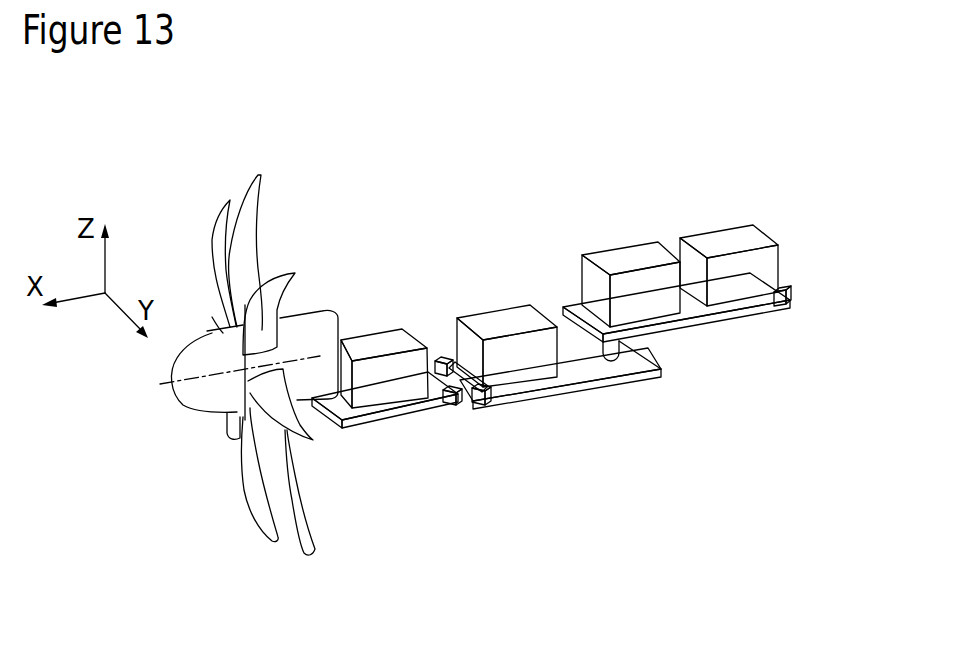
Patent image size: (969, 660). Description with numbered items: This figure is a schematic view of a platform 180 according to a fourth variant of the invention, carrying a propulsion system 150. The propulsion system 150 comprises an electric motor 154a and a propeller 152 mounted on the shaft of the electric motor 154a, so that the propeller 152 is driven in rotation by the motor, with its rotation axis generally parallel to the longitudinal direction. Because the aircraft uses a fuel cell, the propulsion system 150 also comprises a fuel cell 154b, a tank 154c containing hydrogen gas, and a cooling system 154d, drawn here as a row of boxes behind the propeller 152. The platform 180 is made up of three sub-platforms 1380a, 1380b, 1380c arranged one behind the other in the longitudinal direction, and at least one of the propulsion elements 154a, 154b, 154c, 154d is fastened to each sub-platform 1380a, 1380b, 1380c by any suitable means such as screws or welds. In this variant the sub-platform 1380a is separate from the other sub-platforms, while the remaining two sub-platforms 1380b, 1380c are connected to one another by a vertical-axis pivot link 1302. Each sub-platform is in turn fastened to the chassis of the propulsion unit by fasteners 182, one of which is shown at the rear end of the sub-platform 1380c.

The propeller 152 is at (257, 497).
The electric motor 154a is at (387, 345).
The fuel cell 154b is at (506, 322).
The tank 154c is at (630, 257).
The cooling system 154d is at (718, 244).
The sub-platform 1380a is at (402, 412).
The sub-platform 1380b is at (577, 373).
The sub-platform 1380c is at (690, 318).
The vertical-axis pivot link 1302 is at (661, 369).
The fasteners 182 is at (787, 292).
The propulsion system 150 is at (582, 265).
The platform 180 is at (593, 331).